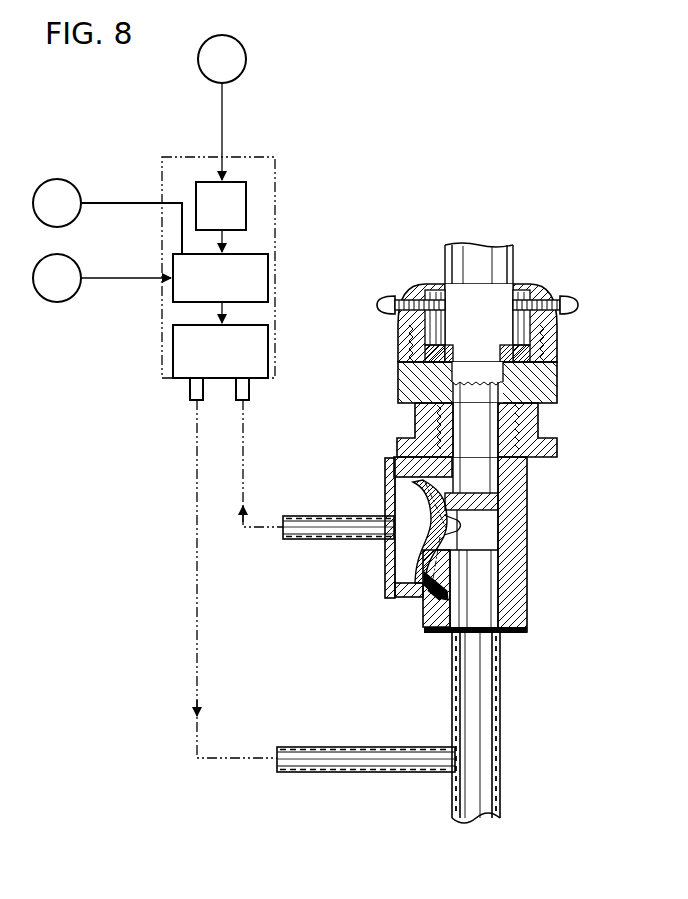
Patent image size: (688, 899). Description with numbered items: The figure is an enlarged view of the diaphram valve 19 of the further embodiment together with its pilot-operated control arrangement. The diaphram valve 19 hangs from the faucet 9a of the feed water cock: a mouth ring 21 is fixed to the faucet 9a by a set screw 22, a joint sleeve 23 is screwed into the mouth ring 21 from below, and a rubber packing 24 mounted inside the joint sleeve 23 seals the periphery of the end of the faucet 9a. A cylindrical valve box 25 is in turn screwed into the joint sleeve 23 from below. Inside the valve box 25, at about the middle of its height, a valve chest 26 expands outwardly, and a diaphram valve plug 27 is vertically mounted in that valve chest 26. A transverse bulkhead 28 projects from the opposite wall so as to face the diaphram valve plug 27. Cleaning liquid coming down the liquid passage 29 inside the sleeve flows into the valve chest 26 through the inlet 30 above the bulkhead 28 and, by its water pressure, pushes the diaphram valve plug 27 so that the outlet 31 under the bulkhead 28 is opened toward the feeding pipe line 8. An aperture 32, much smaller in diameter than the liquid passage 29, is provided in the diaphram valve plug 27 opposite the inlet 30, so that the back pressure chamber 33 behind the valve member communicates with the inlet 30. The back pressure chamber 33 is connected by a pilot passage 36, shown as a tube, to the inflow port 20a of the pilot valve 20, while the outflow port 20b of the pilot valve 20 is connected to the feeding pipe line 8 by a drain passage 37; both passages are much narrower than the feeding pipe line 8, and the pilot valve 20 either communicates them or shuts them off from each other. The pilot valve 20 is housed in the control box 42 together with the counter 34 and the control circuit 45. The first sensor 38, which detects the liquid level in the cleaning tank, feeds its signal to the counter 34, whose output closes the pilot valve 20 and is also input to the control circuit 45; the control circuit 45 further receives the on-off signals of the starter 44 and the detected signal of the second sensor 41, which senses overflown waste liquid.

The feeding pipe line 8 is at (501, 706).
The faucet 9a is at (501, 268).
The diaphram valve 19 is at (530, 515).
The pilot valve 20 is at (220, 351).
The inflow port 20a is at (250, 393).
The outflow port 20b is at (192, 396).
The mouth ring 21 is at (557, 342).
The set screw 22 is at (577, 305).
The joint sleeve 23 is at (557, 395).
The rubber packing 24 is at (541, 379).
The valve box 25 is at (464, 551).
The valve chest 26 is at (421, 598).
The diaphram valve plug 27 is at (418, 573).
The bulkhead 28 is at (480, 507).
The liquid passage 29 is at (475, 504).
The inlet 30 is at (456, 488).
The outlet 31 is at (456, 542).
The aperture 32 is at (417, 501).
The back pressure chamber 33 is at (407, 550).
The counter 34 is at (240, 200).
The pilot passage 36 is at (288, 541).
The drain passage 37 is at (327, 773).
The first sensor 38 is at (246, 59).
The second sensor 41 is at (61, 297).
The control box 42 is at (279, 238).
The starter 44 is at (68, 182).
The control circuit 45 is at (220, 278).